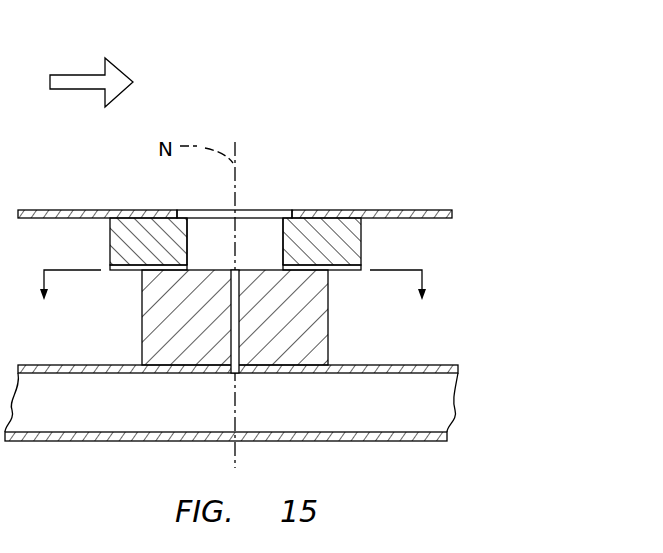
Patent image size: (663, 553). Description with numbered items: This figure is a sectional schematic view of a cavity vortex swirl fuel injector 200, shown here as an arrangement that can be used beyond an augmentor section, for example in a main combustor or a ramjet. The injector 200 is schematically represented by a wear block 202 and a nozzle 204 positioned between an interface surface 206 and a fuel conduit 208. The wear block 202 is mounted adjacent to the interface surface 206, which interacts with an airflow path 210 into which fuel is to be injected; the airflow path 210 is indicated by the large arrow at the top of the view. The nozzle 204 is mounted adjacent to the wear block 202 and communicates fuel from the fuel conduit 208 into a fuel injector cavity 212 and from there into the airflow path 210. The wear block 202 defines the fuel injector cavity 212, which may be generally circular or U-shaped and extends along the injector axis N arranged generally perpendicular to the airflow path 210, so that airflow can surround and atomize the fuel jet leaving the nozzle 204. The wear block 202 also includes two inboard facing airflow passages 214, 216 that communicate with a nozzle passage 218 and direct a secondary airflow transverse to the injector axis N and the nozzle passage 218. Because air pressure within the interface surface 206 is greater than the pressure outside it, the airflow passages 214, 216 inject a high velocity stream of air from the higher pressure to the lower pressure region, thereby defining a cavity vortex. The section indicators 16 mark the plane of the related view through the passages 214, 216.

The cavity vortex swirl fuel injector 200 is at (473, 144).
The wear block 202 is at (386, 253).
The nozzle 204 is at (338, 346).
The interface surface 206 is at (75, 210).
The fuel conduit 208 is at (430, 366).
The airflow path 210 is at (76, 75).
The fuel injector cavity 212 is at (268, 228).
The inboard facing airflow passage 214 is at (128, 270).
The inboard facing airflow passage 216 is at (350, 270).
The nozzle passage 218 is at (230, 350).
The section view indicator 16 is at (233, 301).